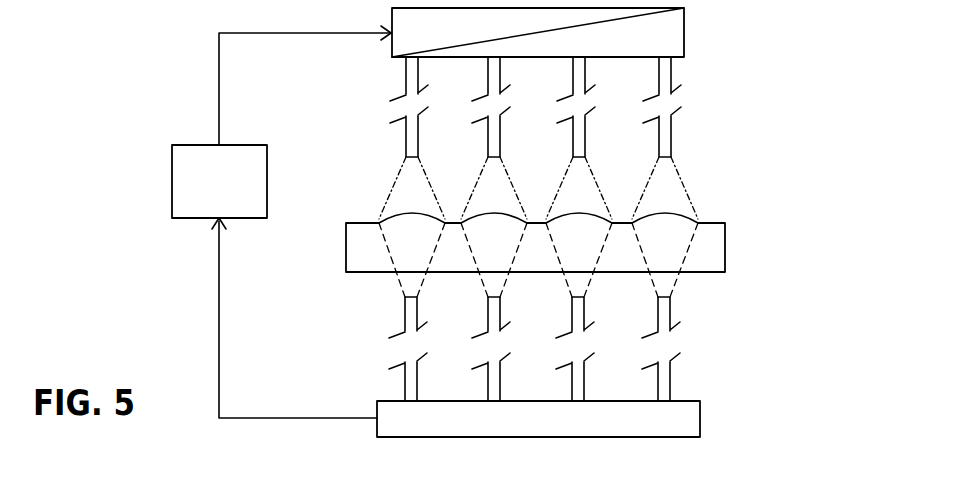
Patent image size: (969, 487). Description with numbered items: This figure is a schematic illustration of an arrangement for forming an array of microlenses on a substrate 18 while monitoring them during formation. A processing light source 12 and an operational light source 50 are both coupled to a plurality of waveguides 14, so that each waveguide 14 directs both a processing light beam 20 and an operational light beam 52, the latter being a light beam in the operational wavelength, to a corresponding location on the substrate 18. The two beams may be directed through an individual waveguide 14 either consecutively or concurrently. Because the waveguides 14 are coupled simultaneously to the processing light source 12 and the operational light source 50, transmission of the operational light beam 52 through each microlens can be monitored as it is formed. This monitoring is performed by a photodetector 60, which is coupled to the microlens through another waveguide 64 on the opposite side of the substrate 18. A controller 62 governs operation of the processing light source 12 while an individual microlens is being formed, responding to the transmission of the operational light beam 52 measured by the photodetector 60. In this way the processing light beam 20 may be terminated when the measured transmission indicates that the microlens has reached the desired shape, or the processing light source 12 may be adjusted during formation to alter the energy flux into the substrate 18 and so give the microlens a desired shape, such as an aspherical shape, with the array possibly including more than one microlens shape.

The processing light source 12 is at (406, 42).
The operational light source 50 is at (643, 44).
The controller 62 is at (205, 197).
The waveguides 14 is at (668, 132).
The substrate 18 is at (531, 242).
The processing light beam 20 is at (672, 211).
The operational light beam 52 is at (688, 262).
The waveguide 64 is at (664, 318).
The photodetector 60 is at (524, 432).